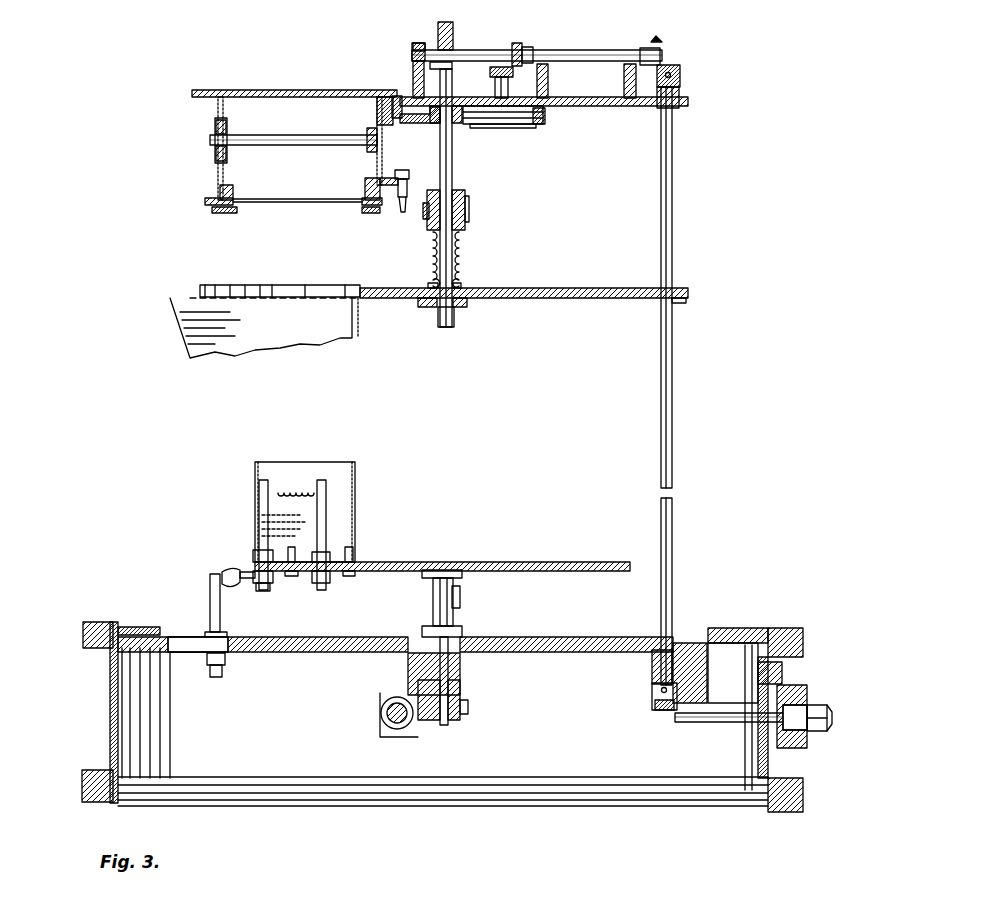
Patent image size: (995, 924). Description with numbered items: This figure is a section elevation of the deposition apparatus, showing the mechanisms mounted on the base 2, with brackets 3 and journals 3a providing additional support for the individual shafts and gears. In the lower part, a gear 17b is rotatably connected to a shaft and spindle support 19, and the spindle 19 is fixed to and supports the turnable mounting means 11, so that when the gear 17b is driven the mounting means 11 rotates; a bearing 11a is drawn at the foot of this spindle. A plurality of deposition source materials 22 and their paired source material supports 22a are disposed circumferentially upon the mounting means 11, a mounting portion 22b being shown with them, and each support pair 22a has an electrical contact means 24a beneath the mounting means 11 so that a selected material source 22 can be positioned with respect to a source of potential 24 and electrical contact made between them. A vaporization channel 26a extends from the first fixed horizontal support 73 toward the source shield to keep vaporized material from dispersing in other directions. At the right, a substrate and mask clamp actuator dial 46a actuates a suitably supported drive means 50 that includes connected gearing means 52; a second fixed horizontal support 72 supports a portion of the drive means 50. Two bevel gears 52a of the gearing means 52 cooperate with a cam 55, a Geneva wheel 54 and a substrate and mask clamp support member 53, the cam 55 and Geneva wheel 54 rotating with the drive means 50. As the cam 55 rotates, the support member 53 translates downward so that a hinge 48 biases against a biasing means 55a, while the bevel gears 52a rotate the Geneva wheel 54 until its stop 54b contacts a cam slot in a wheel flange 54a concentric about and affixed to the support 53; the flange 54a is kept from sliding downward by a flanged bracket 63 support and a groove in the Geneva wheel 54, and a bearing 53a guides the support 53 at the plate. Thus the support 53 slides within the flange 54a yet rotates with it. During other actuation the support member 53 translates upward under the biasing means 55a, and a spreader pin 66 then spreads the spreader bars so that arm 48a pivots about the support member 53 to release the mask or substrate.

The base 2 is at (110, 730).
The bracket 3 is at (413, 75).
The journal 3a is at (413, 46).
The turnable mounting means 11 is at (526, 564).
The bearing 11a is at (380, 712).
The gear 17b is at (468, 720).
The shaft and spindle support 19 is at (460, 616).
The deposition source material 22 is at (285, 492).
The source material support 22a is at (330, 492).
The coil bracket 22b is at (356, 518).
The source of potential 24 is at (210, 586).
The electrical contact means 24a is at (275, 582).
The vaporization channel 26a is at (178, 330).
The substrate and mask clamp actuator dial 46a is at (830, 716).
The hinge 48 is at (470, 222).
The arm 48a is at (425, 208).
The drive means 50 is at (588, 52).
The gearing means 52 is at (663, 56).
The bevel gear 52a is at (518, 44).
The substrate and mask clamp support member 53 is at (452, 154).
The shaft bearing 53a is at (420, 312).
The Geneva wheel 54 is at (520, 128).
The wheel flange 54a is at (415, 124).
The stop 54b is at (545, 118).
The cam 55 is at (453, 24).
The biasing means 55a is at (460, 258).
The flanged bracket support 63 is at (376, 126).
The spreader pin 66 is at (394, 206).
The second fixed horizontal support 72 is at (618, 106).
The first fixed horizontal support 73 is at (568, 298).